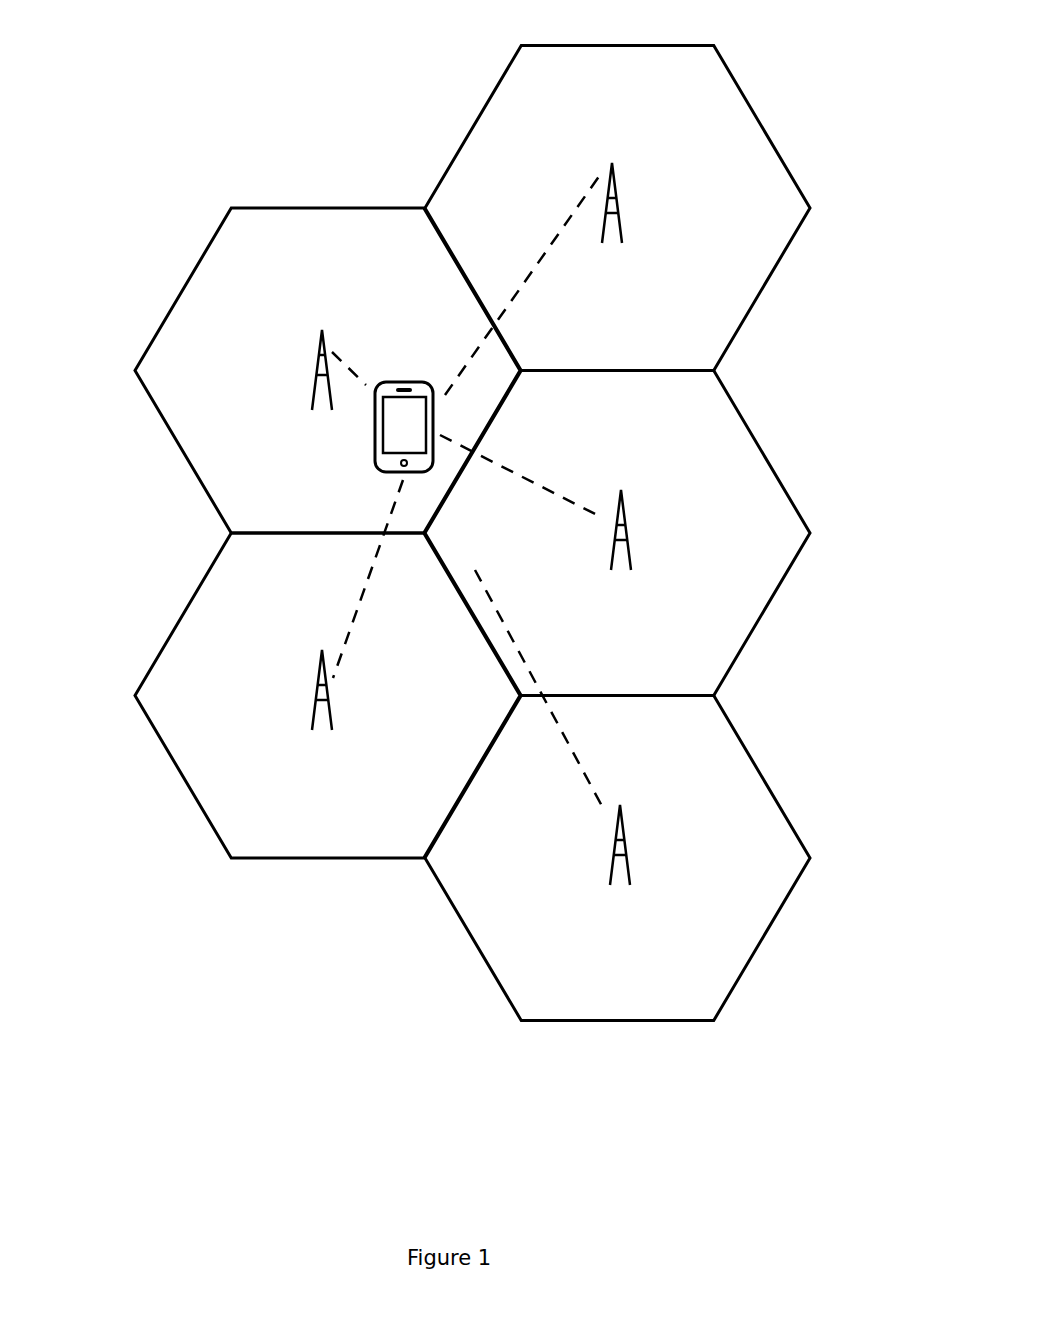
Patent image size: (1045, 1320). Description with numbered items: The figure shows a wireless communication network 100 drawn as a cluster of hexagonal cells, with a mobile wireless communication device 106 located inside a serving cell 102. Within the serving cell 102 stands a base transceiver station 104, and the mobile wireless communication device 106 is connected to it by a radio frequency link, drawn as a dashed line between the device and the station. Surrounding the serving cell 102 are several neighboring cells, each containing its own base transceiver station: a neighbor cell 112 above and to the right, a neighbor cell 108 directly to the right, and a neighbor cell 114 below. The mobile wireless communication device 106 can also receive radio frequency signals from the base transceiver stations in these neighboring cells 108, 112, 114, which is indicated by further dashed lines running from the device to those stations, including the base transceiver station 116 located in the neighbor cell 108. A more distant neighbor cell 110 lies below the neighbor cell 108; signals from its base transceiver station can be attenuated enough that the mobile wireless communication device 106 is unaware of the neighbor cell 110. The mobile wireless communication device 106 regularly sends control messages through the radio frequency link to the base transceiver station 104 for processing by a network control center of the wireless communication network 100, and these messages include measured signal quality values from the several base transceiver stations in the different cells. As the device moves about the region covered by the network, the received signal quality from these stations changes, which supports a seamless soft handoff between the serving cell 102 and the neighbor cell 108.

The wireless communication network 100 is at (122, 80).
The serving cell 102 is at (200, 233).
The base transceiver station 104 is at (333, 330).
The mobile wireless communication device 106 is at (366, 441).
The neighbor cell 108 is at (778, 448).
The neighbor cell 110 is at (778, 768).
The neighbor cell 112 is at (778, 118).
The neighbor cell 114 is at (170, 788).
The base transceiver station 116 is at (648, 494).